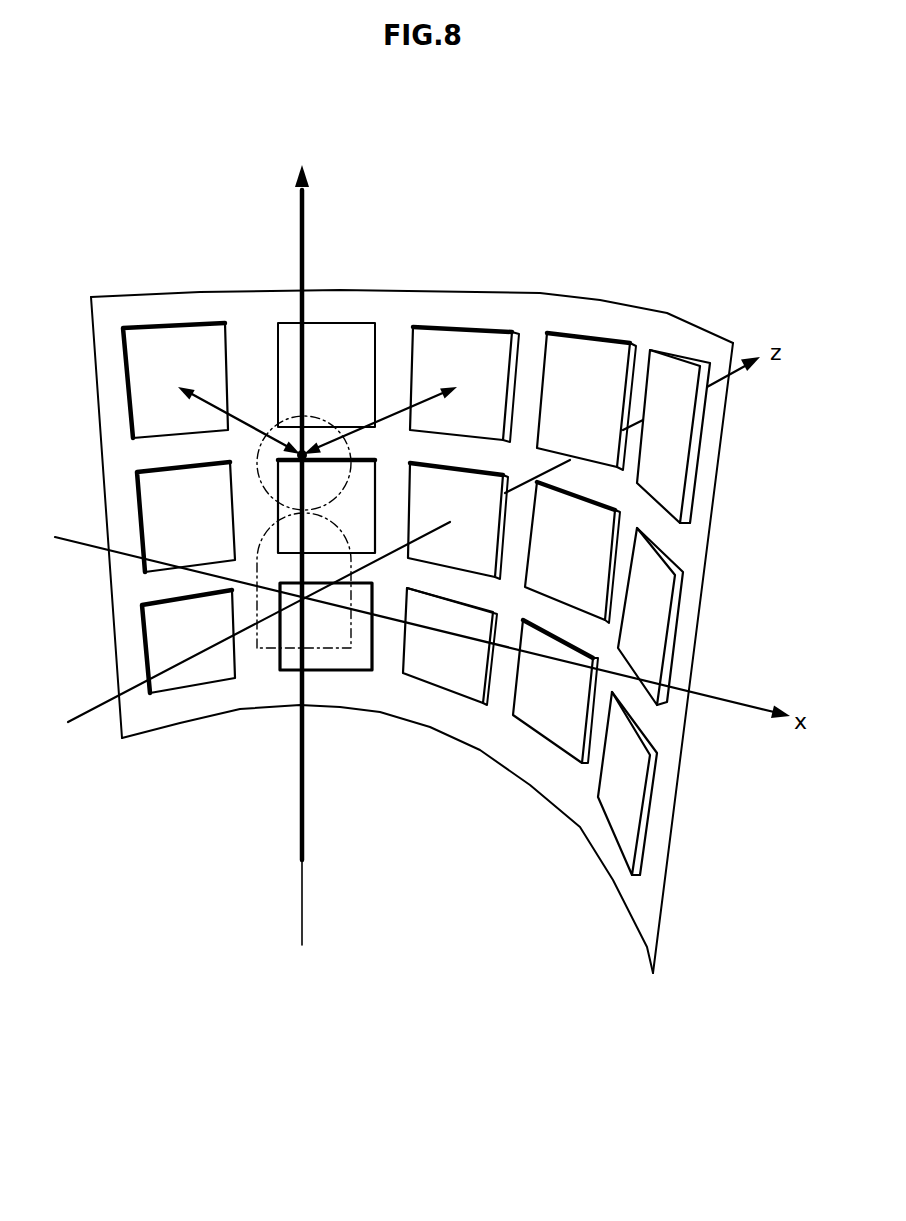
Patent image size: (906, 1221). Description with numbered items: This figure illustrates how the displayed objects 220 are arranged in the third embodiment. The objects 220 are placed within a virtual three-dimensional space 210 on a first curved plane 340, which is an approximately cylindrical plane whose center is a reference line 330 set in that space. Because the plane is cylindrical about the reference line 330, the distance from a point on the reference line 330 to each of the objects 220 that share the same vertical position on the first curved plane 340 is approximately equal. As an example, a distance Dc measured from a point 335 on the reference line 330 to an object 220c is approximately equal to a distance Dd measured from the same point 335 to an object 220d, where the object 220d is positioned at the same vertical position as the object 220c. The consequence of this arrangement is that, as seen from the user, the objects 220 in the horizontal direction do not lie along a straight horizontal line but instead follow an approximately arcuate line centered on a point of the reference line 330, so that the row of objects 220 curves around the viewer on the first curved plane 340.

The virtual three-dimensional space 210 is at (93, 238).
The objects 220 is at (530, 316).
The object 220c is at (467, 323).
The object 220d is at (173, 323).
The reference line 330 is at (307, 222).
The point 335 is at (306, 449).
The first curved plane 340 is at (623, 300).
The distance Dd is at (240, 424).
The distance Dc is at (388, 412).